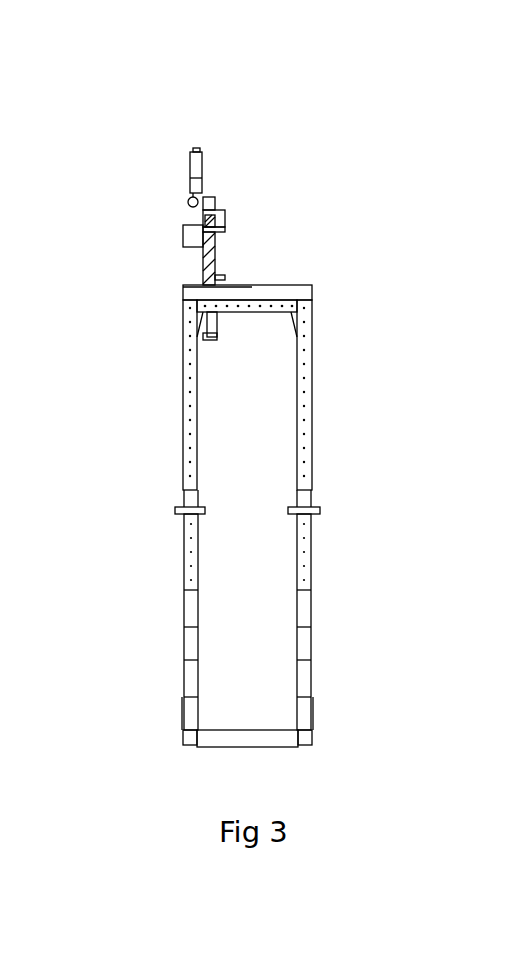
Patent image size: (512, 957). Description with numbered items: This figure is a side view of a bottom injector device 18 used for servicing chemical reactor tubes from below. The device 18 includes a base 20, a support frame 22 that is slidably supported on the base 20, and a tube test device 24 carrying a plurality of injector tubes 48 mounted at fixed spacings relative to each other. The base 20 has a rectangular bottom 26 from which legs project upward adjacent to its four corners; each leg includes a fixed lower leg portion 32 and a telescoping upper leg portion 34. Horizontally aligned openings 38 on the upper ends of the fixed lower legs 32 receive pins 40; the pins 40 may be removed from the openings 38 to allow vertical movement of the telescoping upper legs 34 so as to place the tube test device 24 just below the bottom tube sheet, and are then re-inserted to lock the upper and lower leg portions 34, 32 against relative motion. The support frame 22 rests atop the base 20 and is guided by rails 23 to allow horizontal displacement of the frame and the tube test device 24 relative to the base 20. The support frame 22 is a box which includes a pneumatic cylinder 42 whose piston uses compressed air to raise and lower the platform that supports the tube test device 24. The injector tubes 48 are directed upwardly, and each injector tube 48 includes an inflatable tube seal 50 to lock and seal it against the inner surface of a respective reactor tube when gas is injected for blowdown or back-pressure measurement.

The device 18 is at (406, 169).
The base 20 is at (168, 624).
The support frame 22 is at (169, 299).
The rails 23 is at (278, 295).
The tube test device 24 is at (168, 236).
The rectangular bottom 26 is at (208, 745).
The fixed lower leg portion 32 is at (197, 615).
The telescoping upper leg portion 34 is at (197, 428).
The openings 38 is at (190, 510).
The pins 40 is at (175, 510).
The pneumatic cylinder 42 is at (207, 338).
The injector tubes 48 is at (203, 163).
The inflatable tube seal 50 is at (203, 190).